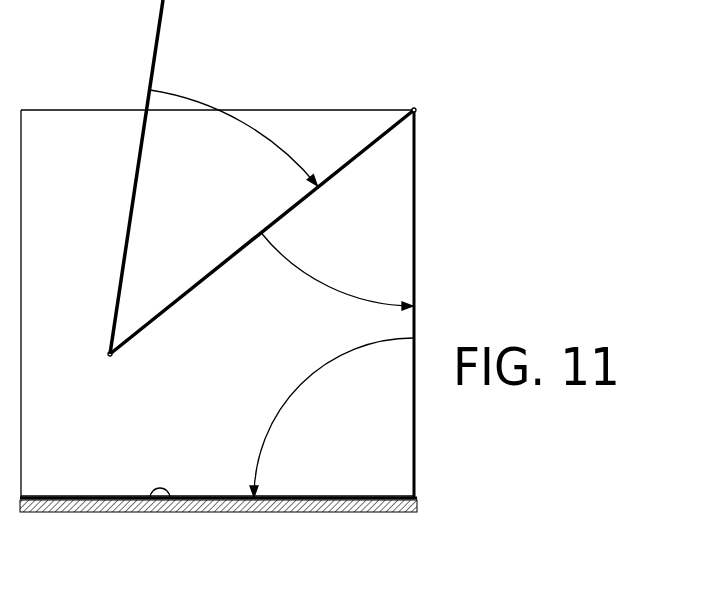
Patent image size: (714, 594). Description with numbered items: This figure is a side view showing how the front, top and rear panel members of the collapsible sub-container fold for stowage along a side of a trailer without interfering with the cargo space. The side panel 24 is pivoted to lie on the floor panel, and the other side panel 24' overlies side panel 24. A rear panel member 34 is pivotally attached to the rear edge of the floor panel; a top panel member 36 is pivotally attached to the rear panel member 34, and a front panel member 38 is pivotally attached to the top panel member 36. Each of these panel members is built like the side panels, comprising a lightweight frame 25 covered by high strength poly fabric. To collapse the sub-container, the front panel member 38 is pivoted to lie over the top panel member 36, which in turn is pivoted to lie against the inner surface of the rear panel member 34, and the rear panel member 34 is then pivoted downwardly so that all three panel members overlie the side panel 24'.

The side panel 24 is at (218, 337).
The side panel 24' is at (217, 465).
The lightweight frame 25 is at (621, 6).
The rear panel member 34 is at (416, 262).
The top panel member 36 is at (232, 255).
The front panel member 38 is at (153, 58).